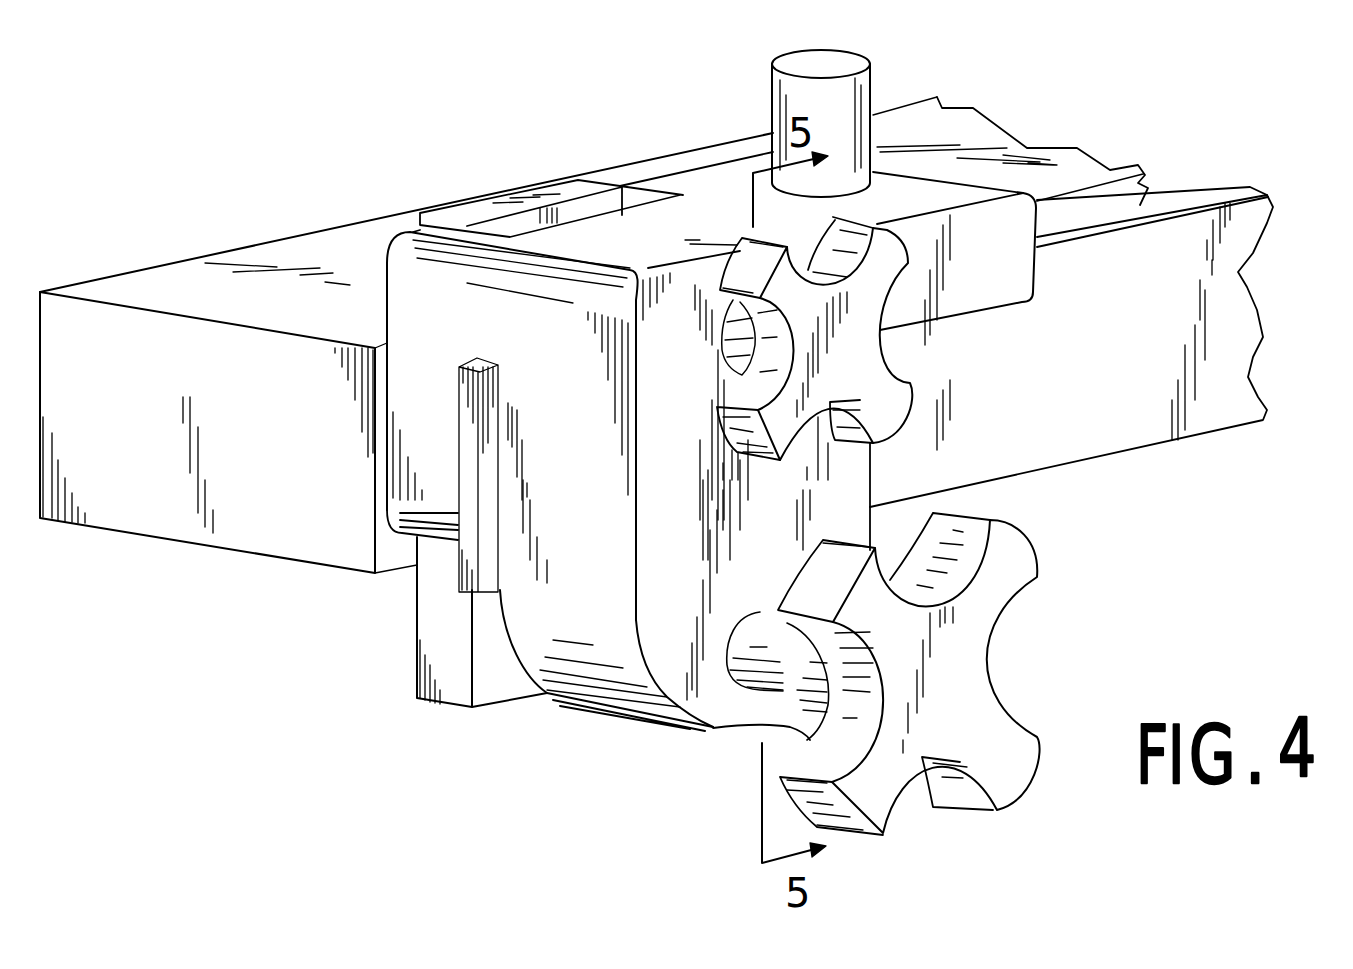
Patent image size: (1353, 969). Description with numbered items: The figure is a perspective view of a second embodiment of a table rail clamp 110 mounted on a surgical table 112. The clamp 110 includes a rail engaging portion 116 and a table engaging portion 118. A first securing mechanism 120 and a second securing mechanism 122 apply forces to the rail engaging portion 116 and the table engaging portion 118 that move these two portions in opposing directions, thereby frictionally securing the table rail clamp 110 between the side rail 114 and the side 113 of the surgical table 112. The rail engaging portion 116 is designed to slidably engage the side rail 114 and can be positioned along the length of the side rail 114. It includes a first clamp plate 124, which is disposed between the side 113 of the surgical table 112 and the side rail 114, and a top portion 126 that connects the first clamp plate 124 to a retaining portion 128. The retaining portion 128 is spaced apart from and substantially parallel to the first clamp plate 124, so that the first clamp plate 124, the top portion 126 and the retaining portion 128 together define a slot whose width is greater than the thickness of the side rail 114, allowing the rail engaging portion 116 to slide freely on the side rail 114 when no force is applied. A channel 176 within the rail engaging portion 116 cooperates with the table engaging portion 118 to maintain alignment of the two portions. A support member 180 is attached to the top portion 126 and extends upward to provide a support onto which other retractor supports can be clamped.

The table rail clamp 110 is at (649, 470).
The surgical table 112 is at (973, 125).
The side of the surgical table 113 is at (1147, 188).
The side rail 114 is at (1233, 307).
The rail engaging portion 116 is at (562, 699).
The table engaging portion 118 is at (428, 701).
The first securing mechanism 120 is at (837, 360).
The second securing mechanism 122 is at (946, 802).
The first clamp plate 124 is at (413, 493).
The top portion 126 is at (613, 255).
The retaining portion 128 is at (683, 670).
The channel 176 is at (610, 207).
The support member 180 is at (843, 55).